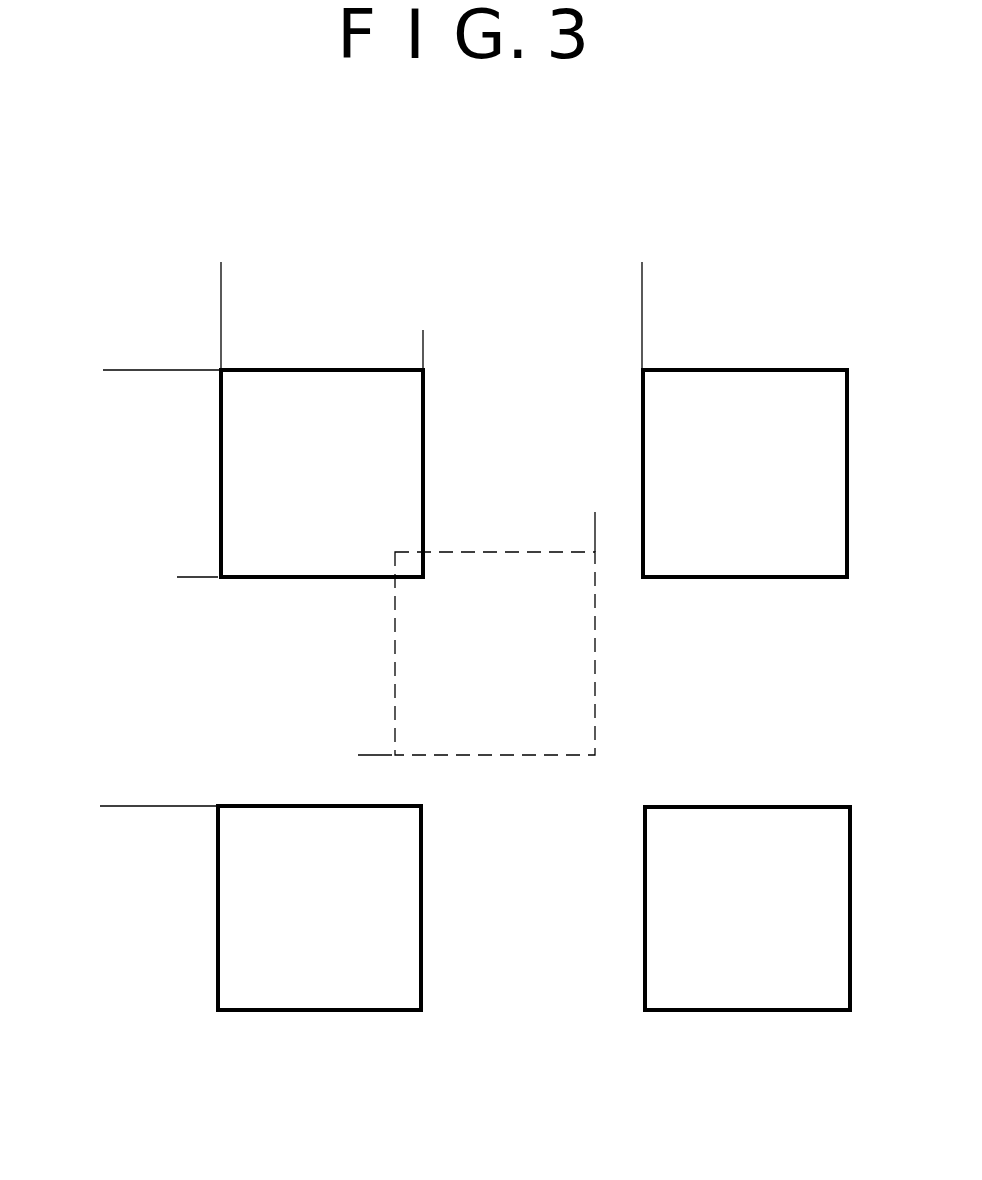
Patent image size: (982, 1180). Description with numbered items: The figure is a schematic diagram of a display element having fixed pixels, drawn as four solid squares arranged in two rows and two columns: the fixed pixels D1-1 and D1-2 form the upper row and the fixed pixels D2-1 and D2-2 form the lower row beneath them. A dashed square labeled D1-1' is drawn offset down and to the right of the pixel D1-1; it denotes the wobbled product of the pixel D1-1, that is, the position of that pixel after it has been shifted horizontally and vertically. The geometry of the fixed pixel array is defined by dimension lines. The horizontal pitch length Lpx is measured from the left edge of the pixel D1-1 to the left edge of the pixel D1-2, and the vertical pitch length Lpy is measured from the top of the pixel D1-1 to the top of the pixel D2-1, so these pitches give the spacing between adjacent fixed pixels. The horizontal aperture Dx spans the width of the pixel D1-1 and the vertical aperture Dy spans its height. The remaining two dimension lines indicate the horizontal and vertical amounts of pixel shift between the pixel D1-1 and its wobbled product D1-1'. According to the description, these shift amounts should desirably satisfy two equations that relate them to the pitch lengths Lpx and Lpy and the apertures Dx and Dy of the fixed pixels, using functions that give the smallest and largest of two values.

The fixed pixel D1-1 is at (322, 473).
The fixed pixel D1-2 is at (745, 473).
The fixed pixel D2-1 is at (319, 908).
The fixed pixel D2-2 is at (747, 908).
The wobbled product of the pixel D1-1' is at (495, 653).
The horizontal pitch length of a fixed pixel Lpx is at (642, 273).
The vertical pitch length of a fixed pixel Lpy is at (118, 370).
The horizontal aperture of a fixed pixel Dx is at (423, 346).
The vertical aperture of a fixed pixel Dy is at (191, 370).